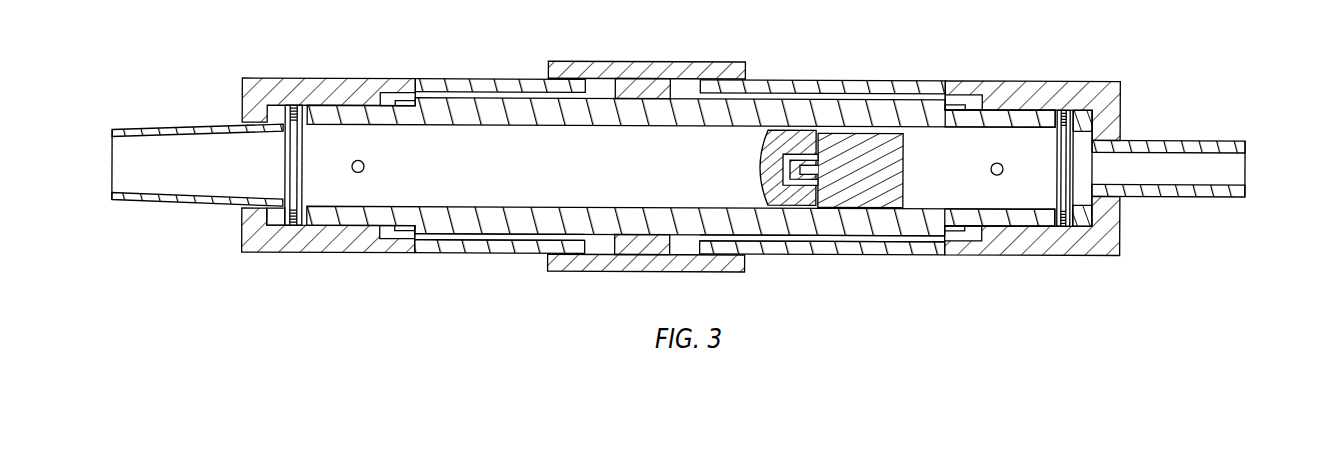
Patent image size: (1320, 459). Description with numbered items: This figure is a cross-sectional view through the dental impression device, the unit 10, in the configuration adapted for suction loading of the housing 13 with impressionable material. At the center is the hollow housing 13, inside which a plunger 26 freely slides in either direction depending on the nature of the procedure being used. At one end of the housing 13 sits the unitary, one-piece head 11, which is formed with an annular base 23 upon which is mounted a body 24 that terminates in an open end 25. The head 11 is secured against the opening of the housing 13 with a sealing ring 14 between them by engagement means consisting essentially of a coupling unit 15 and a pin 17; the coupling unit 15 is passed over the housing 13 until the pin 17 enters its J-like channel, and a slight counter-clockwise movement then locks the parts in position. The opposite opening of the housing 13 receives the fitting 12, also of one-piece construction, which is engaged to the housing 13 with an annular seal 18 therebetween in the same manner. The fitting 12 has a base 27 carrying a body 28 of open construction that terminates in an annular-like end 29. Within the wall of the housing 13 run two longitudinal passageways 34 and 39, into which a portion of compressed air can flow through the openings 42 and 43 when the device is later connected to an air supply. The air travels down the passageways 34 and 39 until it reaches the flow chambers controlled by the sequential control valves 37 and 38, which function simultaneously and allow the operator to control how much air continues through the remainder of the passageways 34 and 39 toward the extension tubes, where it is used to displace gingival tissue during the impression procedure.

The unit 10 is at (680, 166).
The head 11 is at (163, 168).
The fitting 12 is at (1188, 201).
The housing 13 is at (480, 78).
The sealing ring 14 is at (295, 147).
The coupling unit 15 is at (377, 90).
The pin 17 is at (366, 166).
The annular seal 18 is at (1065, 165).
The annular base 23 is at (277, 218).
The body 24 is at (146, 201).
The open end 25 is at (112, 170).
The plunger 26 is at (760, 166).
The base 27 is at (1078, 215).
The body 28 is at (1187, 196).
The annular-like end 29 is at (1247, 165).
The longitudinal passageway 34 is at (492, 98).
The control valve 37 is at (655, 60).
The control valve 38 is at (608, 270).
The longitudinal passageway 39 is at (513, 237).
The opening 42 is at (975, 124).
The opening 43 is at (975, 205).